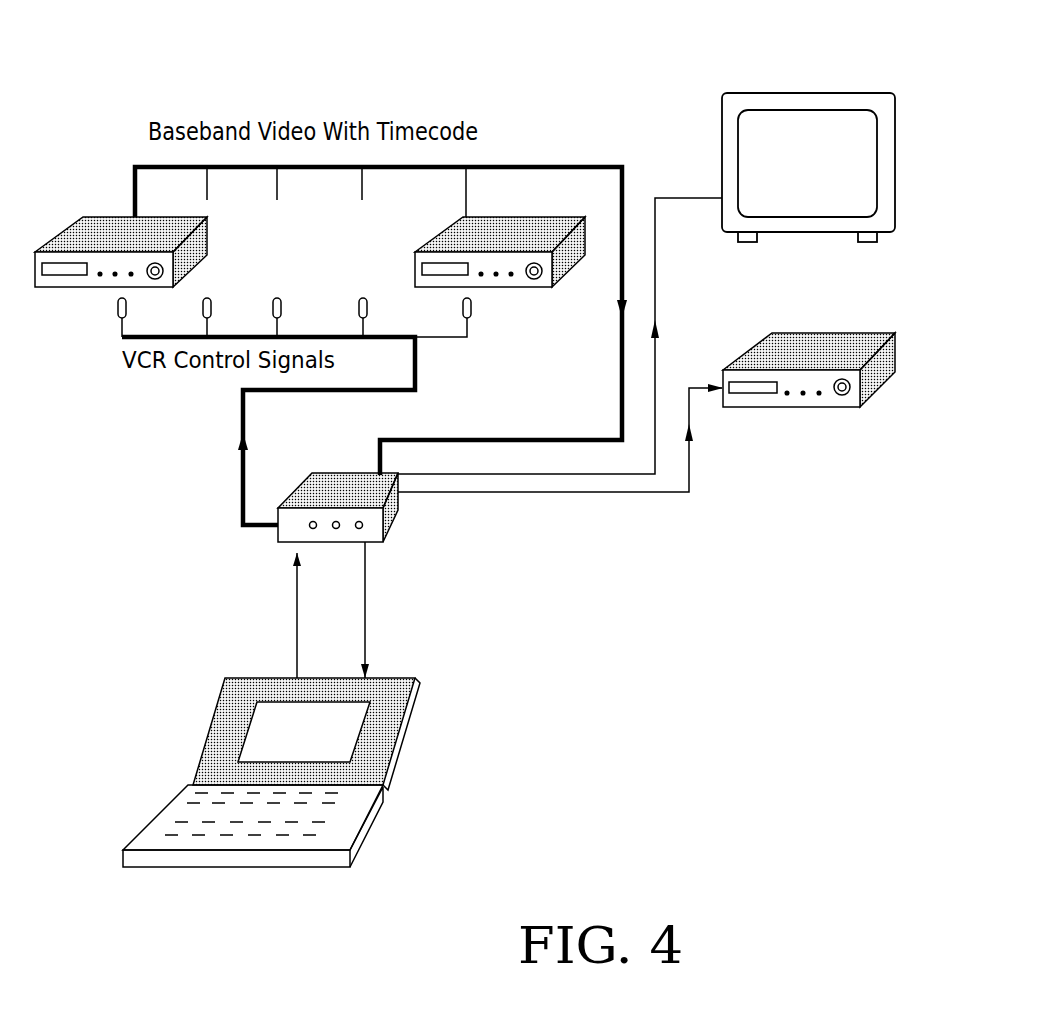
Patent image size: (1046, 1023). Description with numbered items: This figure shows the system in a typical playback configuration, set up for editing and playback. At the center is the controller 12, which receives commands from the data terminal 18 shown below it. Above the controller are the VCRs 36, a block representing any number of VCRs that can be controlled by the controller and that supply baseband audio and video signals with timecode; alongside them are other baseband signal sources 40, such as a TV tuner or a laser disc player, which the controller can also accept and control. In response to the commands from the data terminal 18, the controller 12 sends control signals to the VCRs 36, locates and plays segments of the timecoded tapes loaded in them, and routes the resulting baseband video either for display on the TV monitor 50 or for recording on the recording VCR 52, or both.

The controller 12 is at (383, 542).
The data terminal 18 is at (382, 808).
The VCRs 36 is at (202, 249).
The other baseband signal sources 40 is at (404, 253).
The TV monitor 50 is at (768, 93).
The recording VCR 52 is at (860, 407).